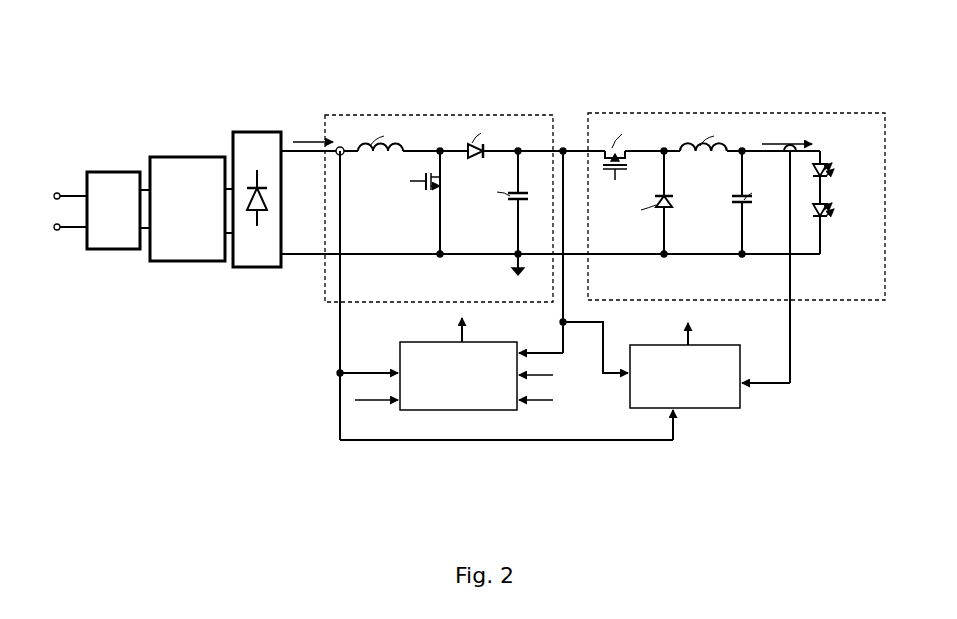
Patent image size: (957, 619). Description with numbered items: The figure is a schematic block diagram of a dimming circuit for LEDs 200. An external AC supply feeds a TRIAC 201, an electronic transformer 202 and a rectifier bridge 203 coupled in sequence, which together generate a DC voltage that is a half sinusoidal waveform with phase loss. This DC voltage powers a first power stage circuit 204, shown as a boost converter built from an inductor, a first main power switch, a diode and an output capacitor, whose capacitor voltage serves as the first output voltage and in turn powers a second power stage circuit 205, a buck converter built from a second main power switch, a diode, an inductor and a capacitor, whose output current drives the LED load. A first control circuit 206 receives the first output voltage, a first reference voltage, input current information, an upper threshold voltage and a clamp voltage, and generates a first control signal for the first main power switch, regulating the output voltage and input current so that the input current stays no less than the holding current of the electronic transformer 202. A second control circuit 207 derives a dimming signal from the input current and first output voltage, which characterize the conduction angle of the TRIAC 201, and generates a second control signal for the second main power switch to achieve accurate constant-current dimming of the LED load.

The dimming circuit for LEDs 200 is at (798, 60).
The TRIAC 201 is at (113, 210).
The electronic transformer 202 is at (187, 209).
The rectifier bridge 203 is at (257, 199).
The first power stage circuit 204 is at (465, 208).
The second power stage circuit 205 is at (736, 206).
The first control circuit 206 is at (458, 361).
The second control circuit 207 is at (685, 356).